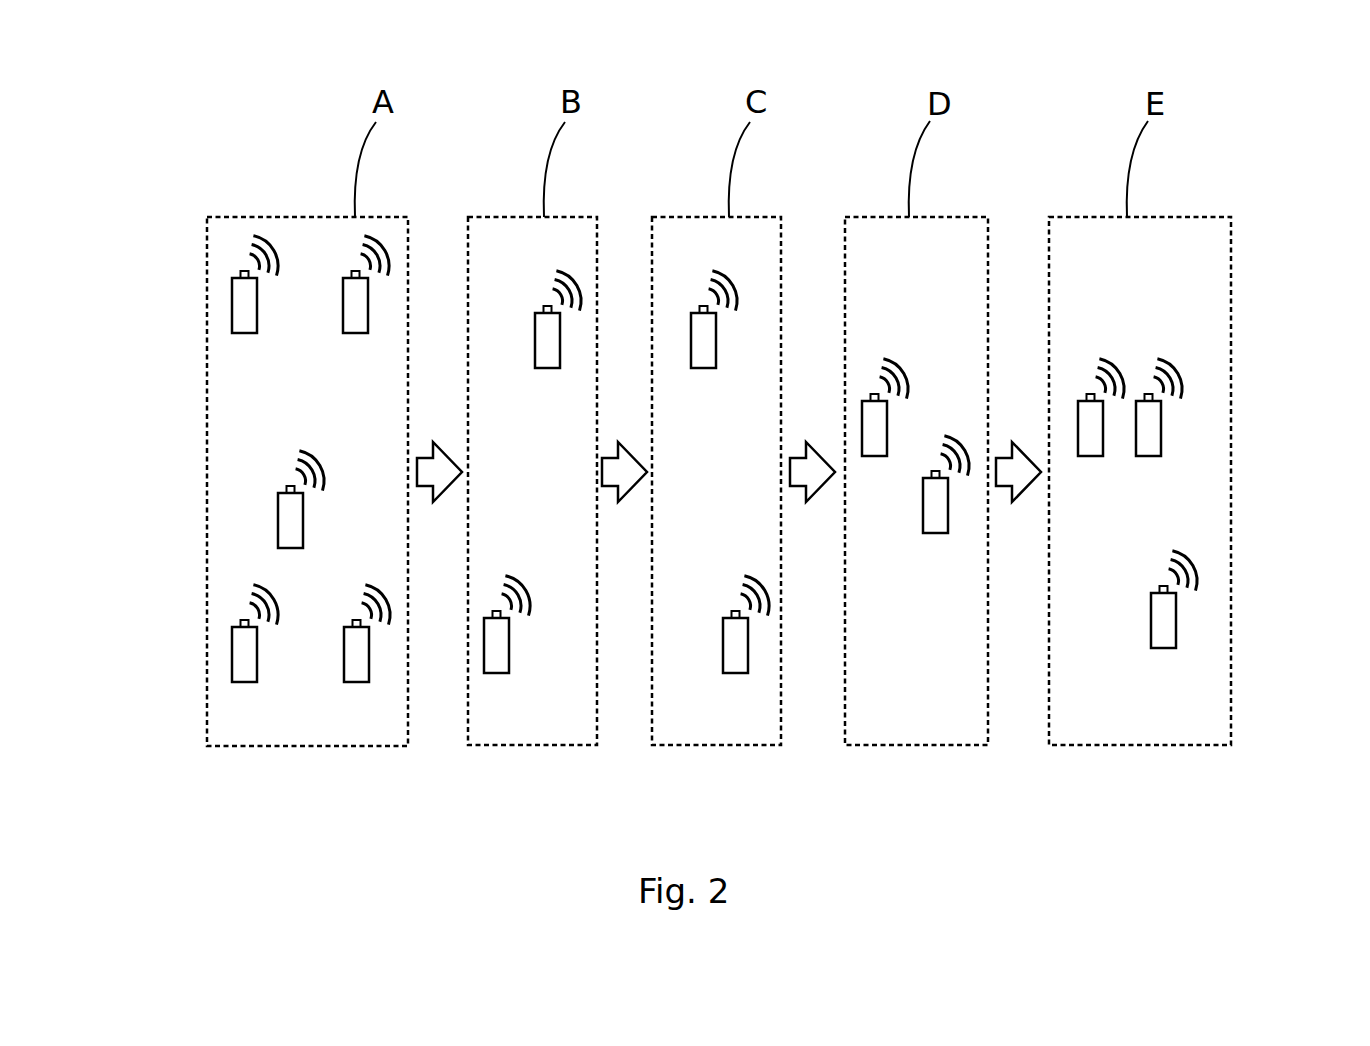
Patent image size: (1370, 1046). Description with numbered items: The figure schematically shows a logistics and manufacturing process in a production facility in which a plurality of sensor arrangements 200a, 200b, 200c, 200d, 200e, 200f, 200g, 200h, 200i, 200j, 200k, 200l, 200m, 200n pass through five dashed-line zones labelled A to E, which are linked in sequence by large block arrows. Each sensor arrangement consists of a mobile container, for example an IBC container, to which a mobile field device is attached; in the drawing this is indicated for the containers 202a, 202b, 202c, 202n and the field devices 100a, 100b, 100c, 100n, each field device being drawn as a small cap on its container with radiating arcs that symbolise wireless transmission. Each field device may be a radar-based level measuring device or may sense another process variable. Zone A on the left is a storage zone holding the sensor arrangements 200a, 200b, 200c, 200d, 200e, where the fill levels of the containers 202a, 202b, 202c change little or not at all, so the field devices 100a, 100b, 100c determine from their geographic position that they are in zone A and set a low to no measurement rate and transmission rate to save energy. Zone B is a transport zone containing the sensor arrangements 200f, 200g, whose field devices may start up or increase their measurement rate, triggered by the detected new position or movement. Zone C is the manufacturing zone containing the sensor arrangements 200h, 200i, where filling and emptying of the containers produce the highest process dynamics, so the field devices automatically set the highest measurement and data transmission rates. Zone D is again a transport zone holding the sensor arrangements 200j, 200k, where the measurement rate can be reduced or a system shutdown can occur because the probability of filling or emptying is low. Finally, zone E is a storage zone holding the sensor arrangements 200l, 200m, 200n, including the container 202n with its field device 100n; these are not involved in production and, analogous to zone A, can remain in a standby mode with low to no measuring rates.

The sensor arrangement 200a is at (250, 689).
The sensor arrangement 200b is at (250, 340).
The sensor arrangement 200c is at (351, 340).
The sensor arrangement 200d is at (304, 556).
The sensor arrangement 200e is at (360, 689).
The sensor arrangement 200f is at (527, 328).
The sensor arrangement 200g is at (500, 680).
The sensor arrangement 200h is at (685, 328).
The sensor arrangement 200i is at (742, 680).
The sensor arrangement 200j is at (873, 462).
The sensor arrangement 200k is at (935, 540).
The sensor arrangement 200l is at (1097, 462).
The sensor arrangement 200m is at (1155, 462).
The sensor arrangement 200n is at (1162, 655).
The mobile field device 100a is at (237, 606).
The mobile field device 100b is at (237, 257).
The mobile field device 100c is at (347, 262).
The mobile field device 100n is at (1178, 590).
The mobile container 202a is at (232, 652).
The mobile container 202b is at (232, 303).
The mobile container 202c is at (337, 300).
The mobile container 202n is at (1187, 643).